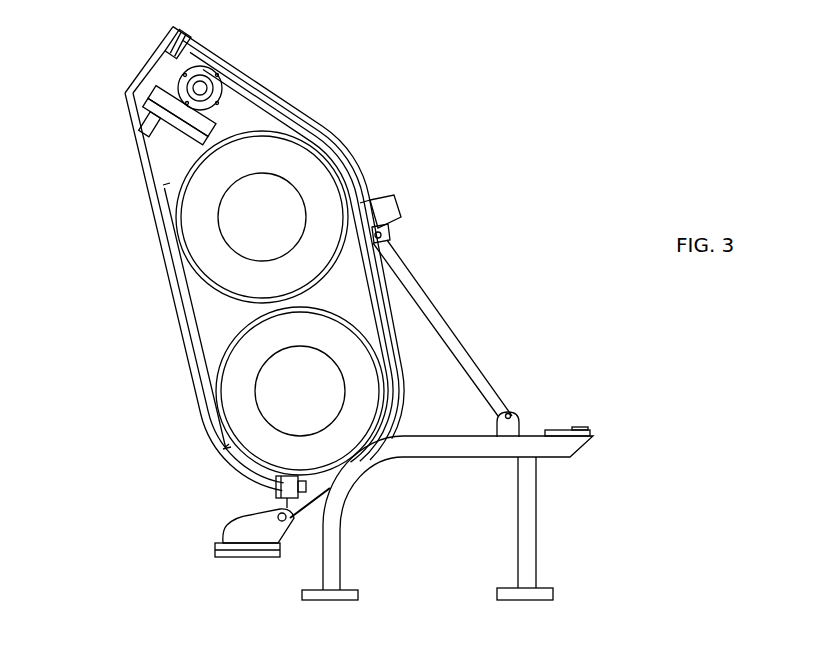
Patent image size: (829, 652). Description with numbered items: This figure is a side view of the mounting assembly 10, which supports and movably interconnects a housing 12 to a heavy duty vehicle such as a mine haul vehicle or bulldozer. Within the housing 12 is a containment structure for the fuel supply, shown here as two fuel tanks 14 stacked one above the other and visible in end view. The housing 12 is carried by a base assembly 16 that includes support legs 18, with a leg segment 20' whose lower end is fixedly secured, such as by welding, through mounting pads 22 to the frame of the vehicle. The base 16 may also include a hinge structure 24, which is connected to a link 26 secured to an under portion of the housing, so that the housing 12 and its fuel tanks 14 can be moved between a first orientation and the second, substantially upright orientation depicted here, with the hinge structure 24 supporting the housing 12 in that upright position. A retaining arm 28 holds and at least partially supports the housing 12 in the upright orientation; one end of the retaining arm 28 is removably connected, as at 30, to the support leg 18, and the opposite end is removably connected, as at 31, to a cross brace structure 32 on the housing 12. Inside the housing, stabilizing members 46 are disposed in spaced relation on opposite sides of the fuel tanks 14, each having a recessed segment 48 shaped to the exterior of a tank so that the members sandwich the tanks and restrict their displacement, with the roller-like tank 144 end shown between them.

The mounting assembly 10 is at (566, 271).
The housing 12 is at (106, 258).
The fuel tanks 14 is at (317, 152).
The base assembly 16 is at (640, 436).
The support legs 18 is at (590, 487).
The leg segment 20' is at (578, 522).
The mounting pads 22 is at (460, 458).
The hinge structures 24 is at (226, 499).
The link 26 is at (307, 513).
The retaining arms 28 is at (441, 347).
The removable connection to support arm 30 is at (521, 415).
The removable connection to housing 31 is at (388, 237).
The cross brace structure 32 is at (394, 197).
The stabilizing members 46 is at (286, 118).
The recessed segment 48 is at (365, 330).
The roller 144 is at (260, 124).